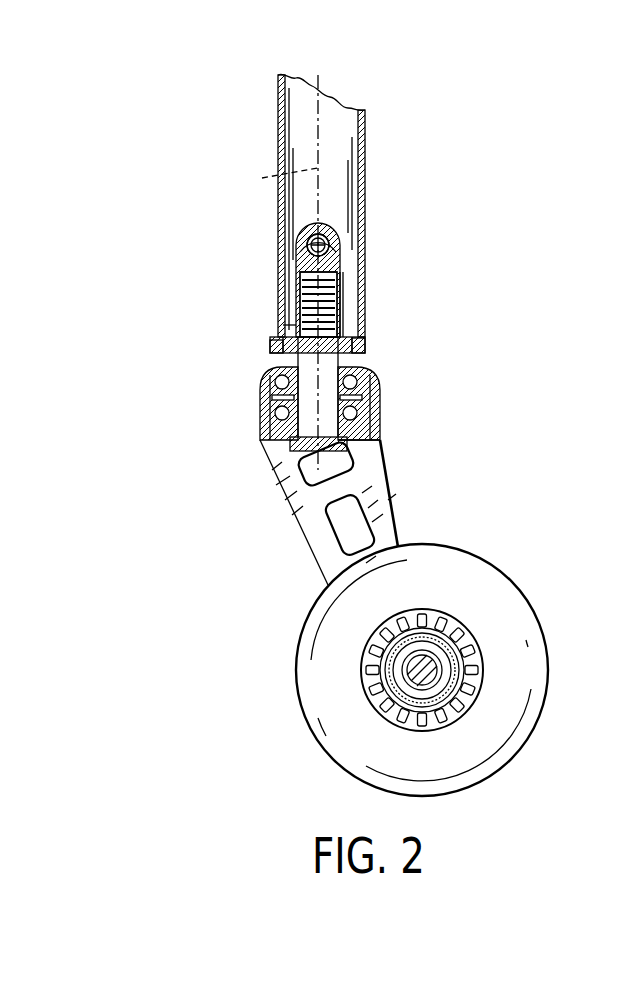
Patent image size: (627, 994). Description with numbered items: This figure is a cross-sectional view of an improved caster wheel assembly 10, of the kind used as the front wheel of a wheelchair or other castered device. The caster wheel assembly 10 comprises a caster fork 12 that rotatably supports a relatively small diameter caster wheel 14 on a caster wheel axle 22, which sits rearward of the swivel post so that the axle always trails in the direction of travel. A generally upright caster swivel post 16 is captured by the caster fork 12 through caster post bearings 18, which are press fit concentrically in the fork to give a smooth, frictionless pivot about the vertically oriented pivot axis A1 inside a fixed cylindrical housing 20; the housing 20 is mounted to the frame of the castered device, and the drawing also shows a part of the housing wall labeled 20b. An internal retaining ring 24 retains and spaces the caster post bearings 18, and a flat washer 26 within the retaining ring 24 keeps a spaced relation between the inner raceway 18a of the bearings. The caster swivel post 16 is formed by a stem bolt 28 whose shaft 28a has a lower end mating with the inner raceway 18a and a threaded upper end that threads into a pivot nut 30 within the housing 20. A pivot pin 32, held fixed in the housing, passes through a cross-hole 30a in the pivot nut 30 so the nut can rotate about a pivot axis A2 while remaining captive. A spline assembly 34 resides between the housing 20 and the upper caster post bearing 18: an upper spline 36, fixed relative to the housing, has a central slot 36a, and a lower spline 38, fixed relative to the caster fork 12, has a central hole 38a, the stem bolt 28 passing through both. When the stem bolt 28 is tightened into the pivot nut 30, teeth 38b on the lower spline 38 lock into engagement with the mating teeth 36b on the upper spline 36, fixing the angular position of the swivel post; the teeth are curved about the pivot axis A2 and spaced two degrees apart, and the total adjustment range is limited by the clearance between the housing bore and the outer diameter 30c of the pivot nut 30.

The caster wheel assembly 10 is at (157, 247).
The caster fork 12 is at (393, 487).
The caster wheel 14 is at (500, 573).
The caster swivel post 16 is at (346, 293).
The caster post bearings 18 is at (382, 397).
The inner raceway 18a is at (298, 447).
The housing 20 is at (362, 213).
The tube inner wall 20b is at (288, 128).
The caster wheel axle 22 is at (431, 657).
The internal retaining ring 24 is at (262, 392).
The flat washer 26 is at (270, 428).
The stem bolt 28 is at (337, 458).
The shaft 28a is at (275, 372).
The pivot nut 30 is at (296, 232).
The cross-hole 30a is at (332, 228).
The outer diameter 30c is at (358, 280).
The pivot pin 32 is at (332, 246).
The spline assembly 34 is at (485, 319).
The upper spline 36 is at (364, 340).
The central slot 36a is at (364, 352).
The mating teeth 36b is at (272, 351).
The lower spline 38 is at (366, 358).
The central hole 38a is at (367, 420).
The teeth 38b is at (280, 325).
The pivot axis A1 is at (262, 180).
The pivot axis A2 is at (280, 268).